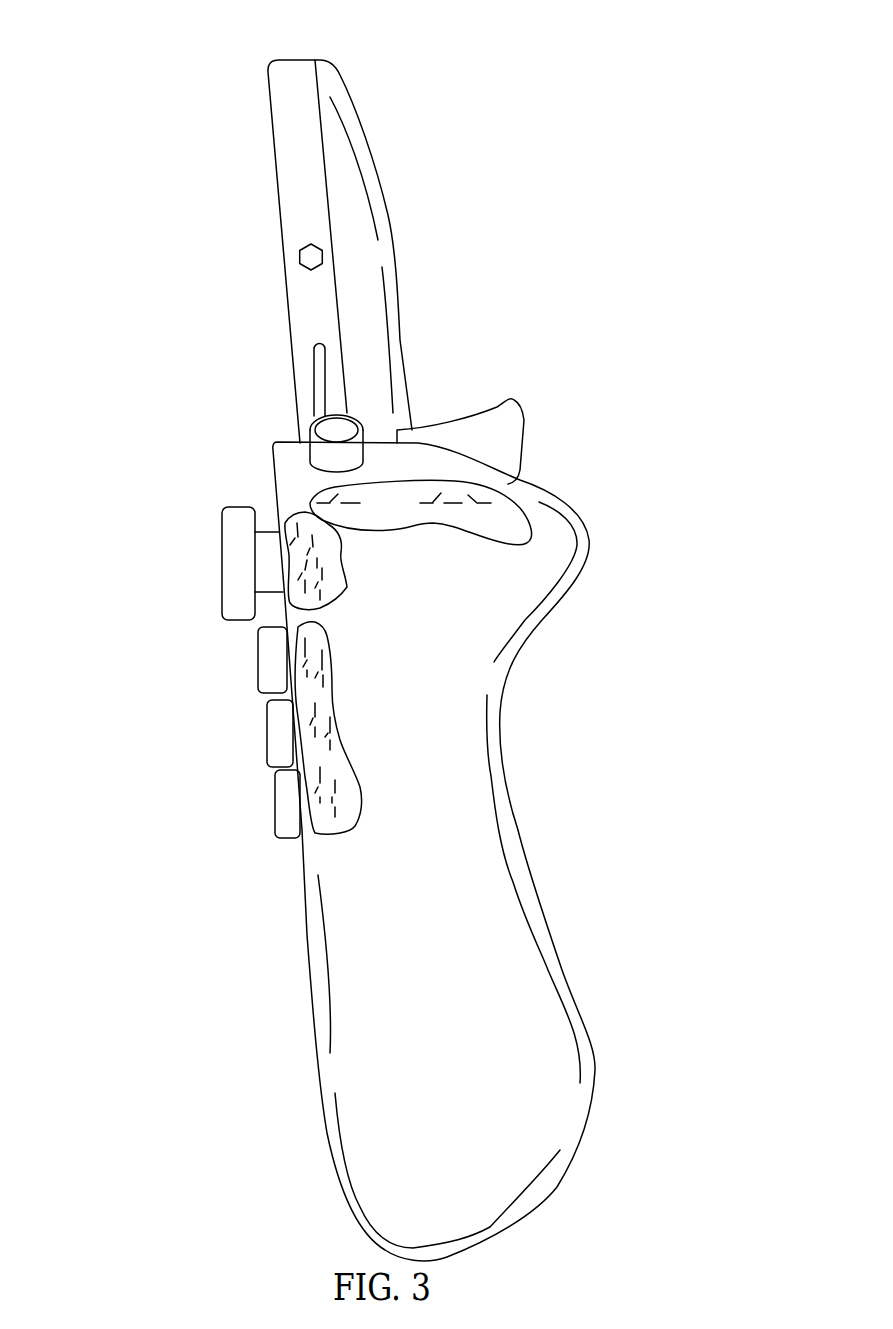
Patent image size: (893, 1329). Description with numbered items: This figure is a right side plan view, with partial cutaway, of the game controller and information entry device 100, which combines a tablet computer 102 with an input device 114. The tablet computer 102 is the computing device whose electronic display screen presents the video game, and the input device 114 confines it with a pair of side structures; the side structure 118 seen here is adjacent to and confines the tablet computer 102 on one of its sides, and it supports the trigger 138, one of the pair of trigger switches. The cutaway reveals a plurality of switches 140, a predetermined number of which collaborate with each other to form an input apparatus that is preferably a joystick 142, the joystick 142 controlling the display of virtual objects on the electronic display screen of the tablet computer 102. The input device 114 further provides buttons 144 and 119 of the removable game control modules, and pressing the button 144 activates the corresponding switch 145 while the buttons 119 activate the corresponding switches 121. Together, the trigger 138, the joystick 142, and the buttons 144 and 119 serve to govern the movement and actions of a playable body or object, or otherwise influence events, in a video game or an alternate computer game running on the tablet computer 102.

The game controller and information entry device 100 is at (482, 76).
The tablet computer 102 is at (403, 228).
The input device 114 is at (586, 1165).
The side structure 118 is at (462, 932).
The buttons 119 is at (267, 642).
The switches 121 is at (342, 720).
The trigger switch 138 is at (489, 437).
The switches 140 is at (350, 589).
The joystick 142 is at (218, 507).
The button 144 is at (310, 420).
The switch 145 is at (362, 511).